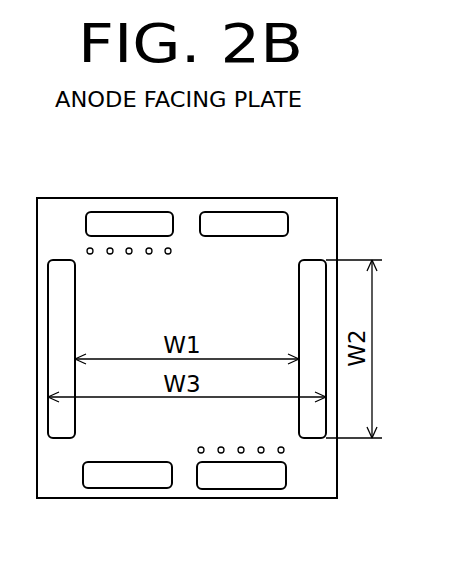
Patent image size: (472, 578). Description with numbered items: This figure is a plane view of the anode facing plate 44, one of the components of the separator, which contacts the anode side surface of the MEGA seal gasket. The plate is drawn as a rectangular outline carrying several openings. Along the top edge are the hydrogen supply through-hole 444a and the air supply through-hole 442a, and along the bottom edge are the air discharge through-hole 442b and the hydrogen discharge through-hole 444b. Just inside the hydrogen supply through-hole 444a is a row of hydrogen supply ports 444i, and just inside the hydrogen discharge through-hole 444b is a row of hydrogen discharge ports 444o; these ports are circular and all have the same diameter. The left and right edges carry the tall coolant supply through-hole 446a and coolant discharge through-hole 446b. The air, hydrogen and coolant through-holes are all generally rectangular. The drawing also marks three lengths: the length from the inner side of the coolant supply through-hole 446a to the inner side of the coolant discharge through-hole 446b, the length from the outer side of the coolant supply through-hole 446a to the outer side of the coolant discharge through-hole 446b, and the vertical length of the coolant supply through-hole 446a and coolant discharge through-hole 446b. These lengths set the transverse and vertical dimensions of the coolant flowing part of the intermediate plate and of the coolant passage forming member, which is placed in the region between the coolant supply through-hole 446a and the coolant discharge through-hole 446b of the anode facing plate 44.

The anode facing plate 44 is at (316, 198).
The air supply through-hole 442a is at (255, 212).
The air discharge through-hole 442b is at (128, 488).
The hydrogen supply through-hole 444a is at (142, 212).
The hydrogen discharge through-hole 444b is at (235, 490).
The hydrogen supply ports 444i is at (150, 255).
The hydrogen discharge ports 444o is at (220, 446).
The coolant supply through-hole 446a is at (58, 438).
The coolant discharge through-hole 446b is at (315, 438).